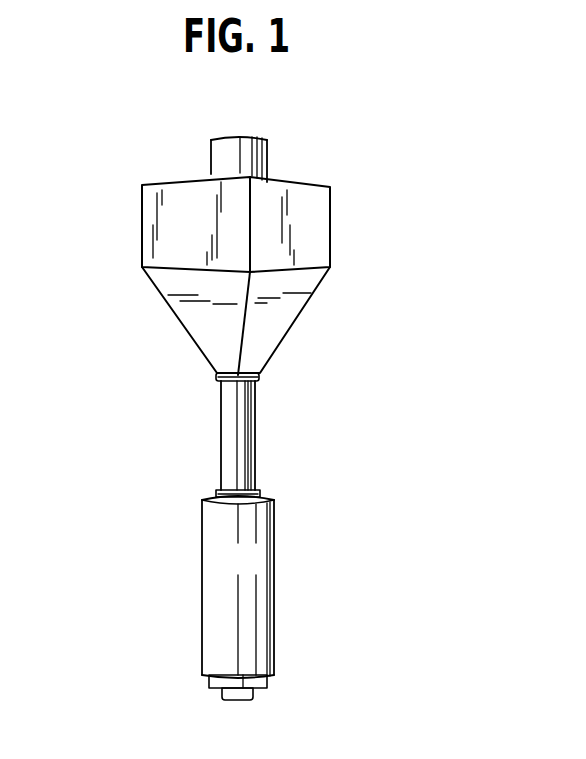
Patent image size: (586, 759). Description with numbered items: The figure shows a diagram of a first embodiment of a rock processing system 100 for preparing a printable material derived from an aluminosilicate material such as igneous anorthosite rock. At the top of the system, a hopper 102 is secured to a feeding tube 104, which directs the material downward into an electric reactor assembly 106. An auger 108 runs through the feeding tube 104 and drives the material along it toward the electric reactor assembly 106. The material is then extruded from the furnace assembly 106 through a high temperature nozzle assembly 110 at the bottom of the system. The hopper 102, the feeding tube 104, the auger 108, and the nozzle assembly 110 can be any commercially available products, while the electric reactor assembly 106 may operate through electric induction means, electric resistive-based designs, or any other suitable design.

The rock processing system 100 is at (113, 160).
The hopper 102 is at (203, 233).
The feeding tube 104 is at (230, 393).
The electric reactor assembly 106 is at (256, 571).
The auger 108 is at (233, 447).
The high temperature nozzle assembly 110 is at (230, 707).